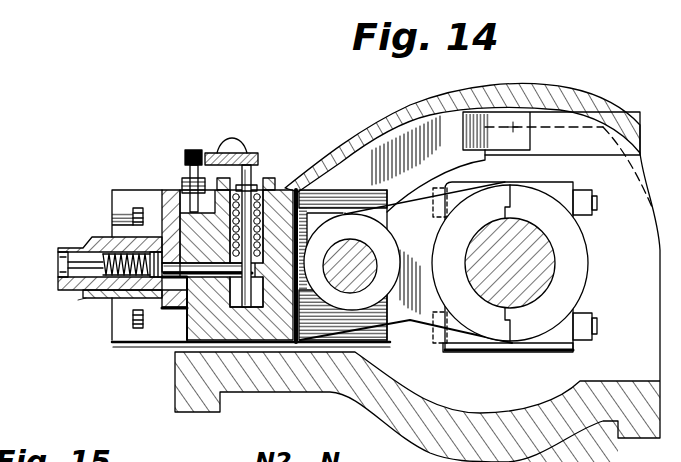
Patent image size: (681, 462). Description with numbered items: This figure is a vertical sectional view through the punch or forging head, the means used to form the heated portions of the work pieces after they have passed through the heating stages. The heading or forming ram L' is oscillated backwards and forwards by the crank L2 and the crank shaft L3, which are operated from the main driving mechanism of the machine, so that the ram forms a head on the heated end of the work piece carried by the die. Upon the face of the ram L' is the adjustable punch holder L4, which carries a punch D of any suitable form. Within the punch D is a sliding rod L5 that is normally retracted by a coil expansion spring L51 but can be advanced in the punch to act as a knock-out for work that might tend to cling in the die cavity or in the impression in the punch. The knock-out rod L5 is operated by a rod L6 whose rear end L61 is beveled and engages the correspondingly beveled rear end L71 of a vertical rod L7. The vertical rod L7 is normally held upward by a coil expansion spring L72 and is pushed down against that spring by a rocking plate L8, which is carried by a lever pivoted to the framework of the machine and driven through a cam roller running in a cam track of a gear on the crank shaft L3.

The heading or forming ram L' is at (417, 253).
The crank L2 is at (570, 233).
The crank shaft L3 is at (537, 262).
The adjustable punch holder L4 is at (173, 192).
The sliding rod L5 is at (87, 261).
The coil expansion spring L51 is at (140, 271).
The rod L6 is at (198, 277).
The rear end of rod L61 is at (232, 272).
The vertical rod L7 is at (266, 187).
The rear end of vertical rod L71 is at (250, 308).
The coil expansion spring L72 is at (212, 152).
The rocking plate L8 is at (247, 156).
The punch D is at (80, 298).